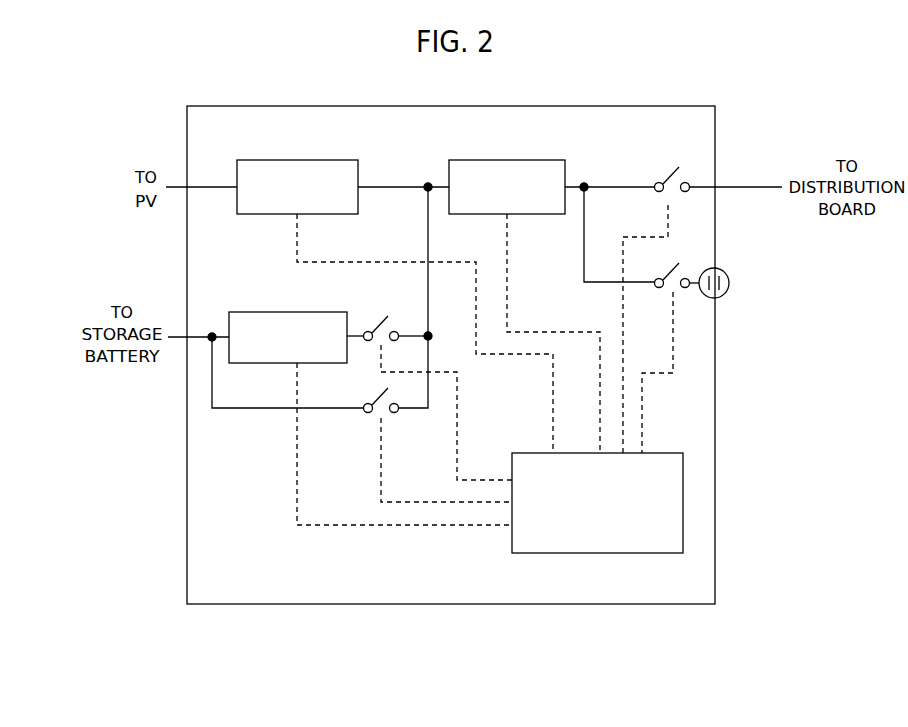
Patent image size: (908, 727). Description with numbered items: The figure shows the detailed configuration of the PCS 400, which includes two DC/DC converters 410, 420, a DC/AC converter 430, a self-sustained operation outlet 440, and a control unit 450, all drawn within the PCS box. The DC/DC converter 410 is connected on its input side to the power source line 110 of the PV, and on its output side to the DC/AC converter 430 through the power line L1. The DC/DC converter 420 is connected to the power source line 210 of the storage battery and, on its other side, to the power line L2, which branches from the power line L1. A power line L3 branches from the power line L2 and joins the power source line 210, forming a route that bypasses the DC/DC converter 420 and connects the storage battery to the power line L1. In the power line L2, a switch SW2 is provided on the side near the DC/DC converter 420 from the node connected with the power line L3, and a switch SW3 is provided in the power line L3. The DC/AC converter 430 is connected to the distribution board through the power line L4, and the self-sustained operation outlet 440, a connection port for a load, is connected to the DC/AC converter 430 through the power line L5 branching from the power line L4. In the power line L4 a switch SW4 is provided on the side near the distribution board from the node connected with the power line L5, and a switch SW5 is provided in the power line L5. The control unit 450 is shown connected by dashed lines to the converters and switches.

The power source line 110 is at (222, 190).
The power source line 210 is at (200, 348).
The PCS 400 is at (750, 113).
The DC/DC converter 410 is at (306, 160).
The DC/DC converter 420 is at (279, 312).
The DC/AC converter 430 is at (506, 160).
The self-sustained operation outlet 440 is at (730, 283).
The control unit 450 is at (592, 553).
The power line L1 is at (412, 186).
The power line L2 is at (427, 242).
The power line L3 is at (225, 410).
The power line L4 is at (616, 185).
The power line L5 is at (584, 232).
The switch SW2 is at (390, 320).
The switch SW3 is at (372, 420).
The switch SW4 is at (668, 178).
The switch SW5 is at (678, 270).